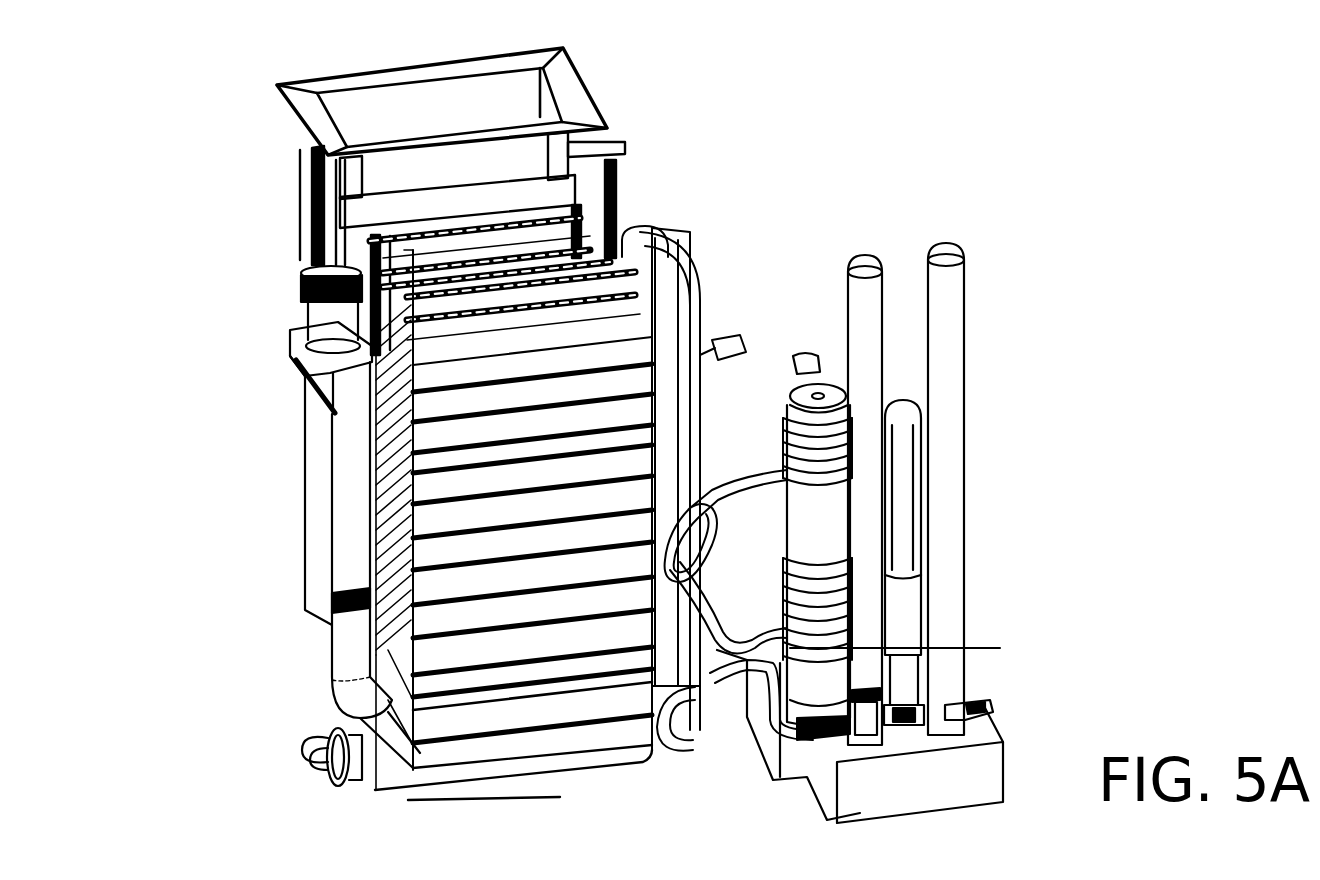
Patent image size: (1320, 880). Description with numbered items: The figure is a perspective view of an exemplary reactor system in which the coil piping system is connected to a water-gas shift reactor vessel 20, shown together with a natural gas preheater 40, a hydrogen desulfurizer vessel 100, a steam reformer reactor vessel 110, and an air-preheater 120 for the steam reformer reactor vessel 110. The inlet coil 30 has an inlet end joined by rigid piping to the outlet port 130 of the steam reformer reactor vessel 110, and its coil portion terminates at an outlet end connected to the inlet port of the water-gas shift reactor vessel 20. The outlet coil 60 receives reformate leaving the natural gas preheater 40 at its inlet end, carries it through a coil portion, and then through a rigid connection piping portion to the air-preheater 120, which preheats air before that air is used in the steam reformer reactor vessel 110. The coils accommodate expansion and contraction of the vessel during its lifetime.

The steam reformer reactor vessel 110 is at (240, 285).
The hydrogen desulfurizer vessel 100 is at (994, 306).
The water-gas shift reactor vessel 20 is at (842, 551).
The inlet coil 30 is at (775, 405).
The natural gas preheater 40 is at (910, 617).
The outlet coil 60 is at (1000, 648).
The air-preheater 120 is at (687, 760).
The outlet port 130 is at (700, 723).